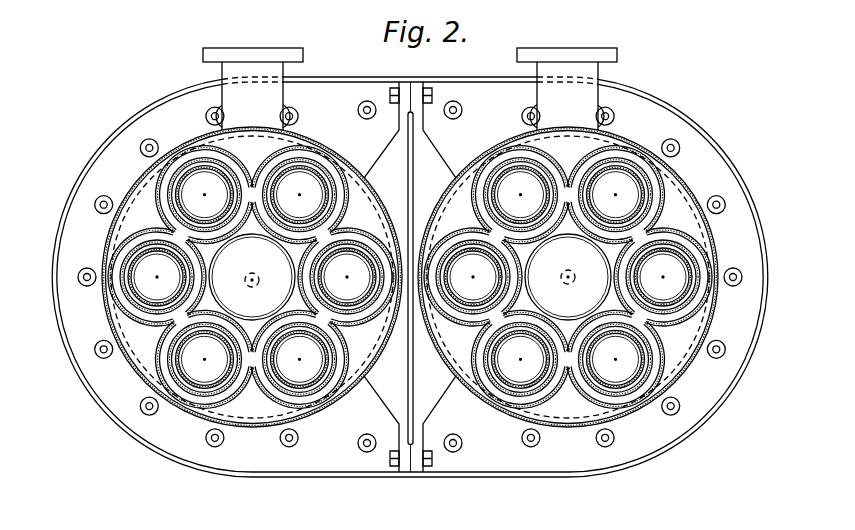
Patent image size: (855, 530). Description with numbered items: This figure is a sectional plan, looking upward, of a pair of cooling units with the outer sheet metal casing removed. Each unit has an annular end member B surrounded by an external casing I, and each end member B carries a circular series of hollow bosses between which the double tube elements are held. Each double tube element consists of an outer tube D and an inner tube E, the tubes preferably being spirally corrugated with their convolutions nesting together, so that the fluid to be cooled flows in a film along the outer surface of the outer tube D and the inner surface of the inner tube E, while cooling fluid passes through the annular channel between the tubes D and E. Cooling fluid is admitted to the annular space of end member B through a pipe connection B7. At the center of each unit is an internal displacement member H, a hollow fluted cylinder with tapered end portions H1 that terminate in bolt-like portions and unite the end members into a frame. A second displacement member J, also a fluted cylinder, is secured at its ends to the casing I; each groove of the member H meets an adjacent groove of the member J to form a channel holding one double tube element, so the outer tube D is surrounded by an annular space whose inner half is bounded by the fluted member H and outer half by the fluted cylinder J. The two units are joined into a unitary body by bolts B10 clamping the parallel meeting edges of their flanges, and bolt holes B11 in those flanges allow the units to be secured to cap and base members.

The annular end member B is at (410, 277).
The pipe connection B7 is at (647, 78).
The bolt B10 is at (393, 470).
The bolt hole B11 is at (180, 450).
The outer tube D is at (230, 173).
The inner tube E is at (226, 226).
The internal displacement member H is at (303, 246).
The tapered end portion H1 is at (290, 284).
The external casing I is at (137, 377).
The external displacement member J is at (125, 250).